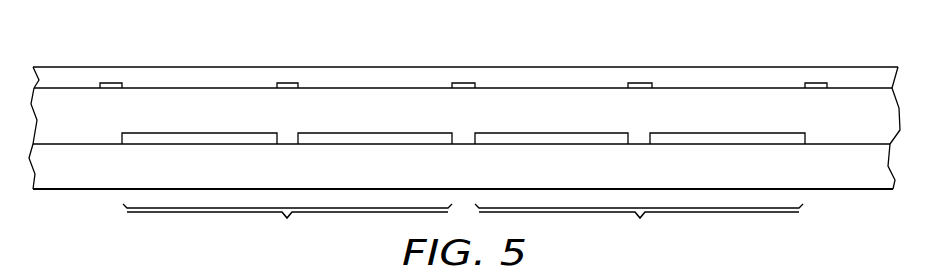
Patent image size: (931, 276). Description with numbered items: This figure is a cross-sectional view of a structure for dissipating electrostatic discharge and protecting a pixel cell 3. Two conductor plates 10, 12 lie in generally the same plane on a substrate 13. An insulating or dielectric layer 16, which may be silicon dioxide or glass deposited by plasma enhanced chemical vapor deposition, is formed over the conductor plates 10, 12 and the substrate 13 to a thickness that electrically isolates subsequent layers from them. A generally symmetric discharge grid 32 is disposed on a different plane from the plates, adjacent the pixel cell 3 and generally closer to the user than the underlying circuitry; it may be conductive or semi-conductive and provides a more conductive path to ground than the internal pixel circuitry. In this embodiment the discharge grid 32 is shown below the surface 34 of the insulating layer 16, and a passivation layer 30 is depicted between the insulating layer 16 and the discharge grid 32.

The pixel cell 3 is at (463, 228).
The conductor plate 10 is at (197, 142).
The conductor plate 12 is at (372, 142).
The substrate 13 is at (865, 184).
The insulating layer 16 is at (868, 130).
The passivation layer 30 is at (865, 73).
The discharge grid 32 is at (286, 82).
The surface 34 is at (528, 67).